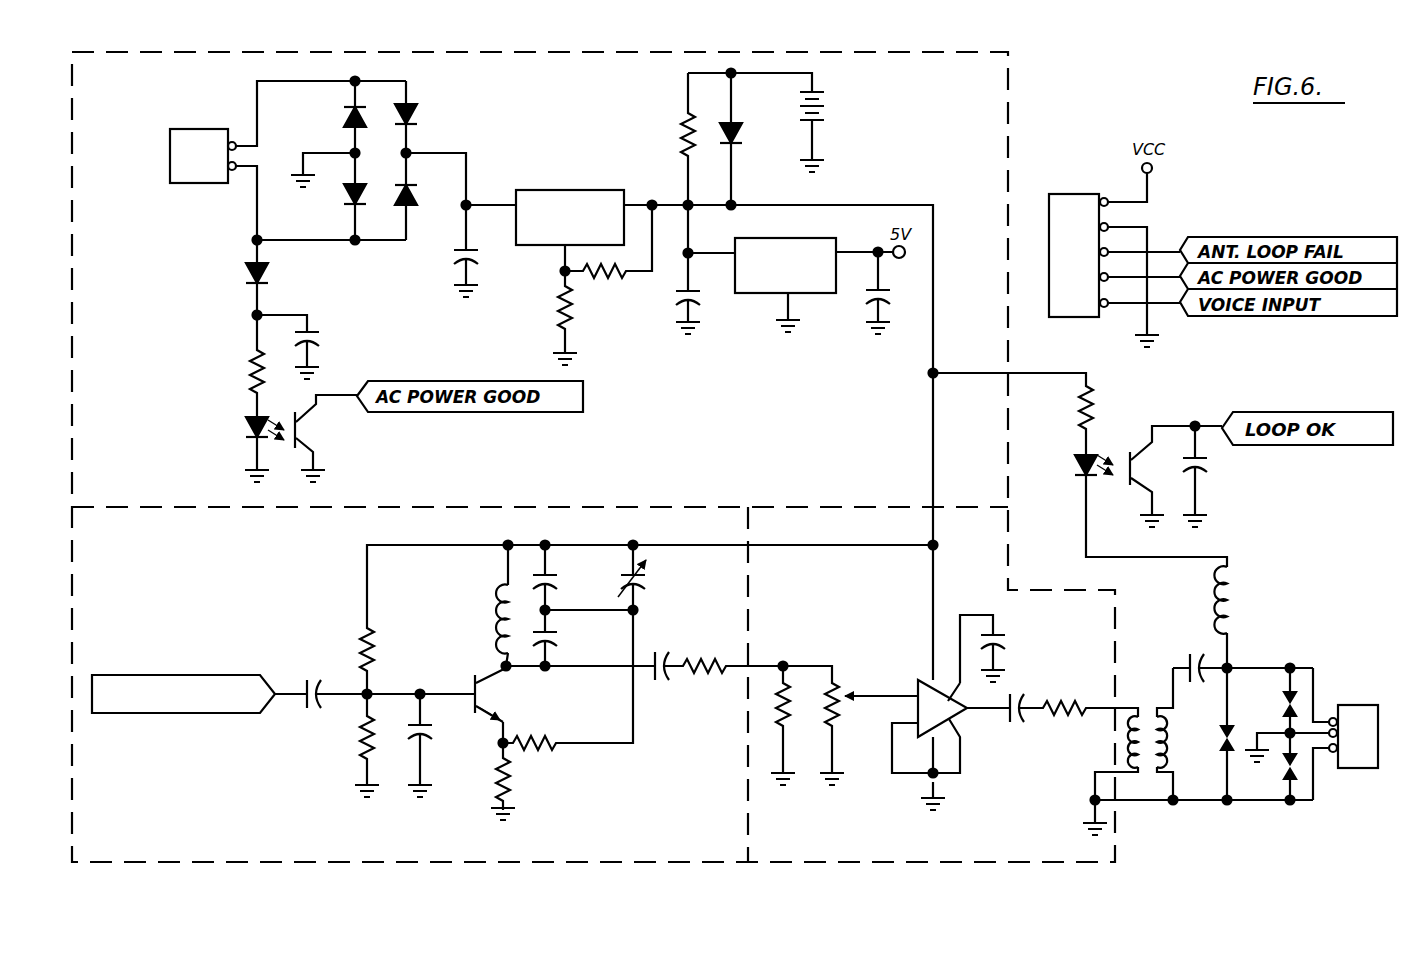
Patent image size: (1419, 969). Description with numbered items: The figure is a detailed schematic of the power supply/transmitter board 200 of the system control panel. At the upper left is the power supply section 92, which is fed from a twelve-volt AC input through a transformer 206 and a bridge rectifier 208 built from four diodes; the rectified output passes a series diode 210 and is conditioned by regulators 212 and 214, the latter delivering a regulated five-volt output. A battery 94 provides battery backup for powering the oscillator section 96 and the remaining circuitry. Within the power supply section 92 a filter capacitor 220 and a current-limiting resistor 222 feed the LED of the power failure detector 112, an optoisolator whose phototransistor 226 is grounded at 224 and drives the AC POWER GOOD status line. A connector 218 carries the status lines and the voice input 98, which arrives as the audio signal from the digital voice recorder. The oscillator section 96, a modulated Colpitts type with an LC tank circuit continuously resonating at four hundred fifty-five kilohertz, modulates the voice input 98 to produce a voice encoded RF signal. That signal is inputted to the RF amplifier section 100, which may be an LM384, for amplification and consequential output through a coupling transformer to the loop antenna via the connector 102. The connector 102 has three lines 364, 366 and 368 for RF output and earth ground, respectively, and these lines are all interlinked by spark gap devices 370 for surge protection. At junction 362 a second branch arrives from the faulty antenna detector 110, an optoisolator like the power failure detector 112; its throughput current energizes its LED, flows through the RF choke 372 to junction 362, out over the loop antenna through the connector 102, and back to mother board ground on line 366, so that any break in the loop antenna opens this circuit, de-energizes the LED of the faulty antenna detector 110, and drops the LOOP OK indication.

The power supply/transmitter board 200 is at (1022, 114).
The power supply section 92 is at (987, 181).
The battery 94 is at (832, 110).
The oscillator section 96 is at (609, 830).
The voice input 98 is at (160, 674).
The RF amplifier section 100 is at (1048, 814).
The connector 102 is at (1362, 769).
The faulty antenna detector 110 is at (1073, 470).
The power failure detector 112 is at (240, 427).
The 12 VAC transformer 206 is at (200, 184).
The bridge rectifier 208 is at (420, 108).
The diode 210 is at (245, 275).
The voltage regulator 212 is at (580, 190).
The 5V voltage regulator 214 is at (790, 238).
The connector 218 is at (1167, 227).
The capacitor 220 is at (325, 335).
The resistor 222 is at (242, 370).
The ground 224 is at (250, 455).
The phototransistor 226 is at (318, 440).
The junction 362 is at (1232, 666).
The line 364 is at (1313, 692).
The line 366 is at (1254, 803).
The line 368 is at (1262, 728).
The spark gap devices 370 is at (1222, 736).
The RF choke 372 is at (1243, 598).